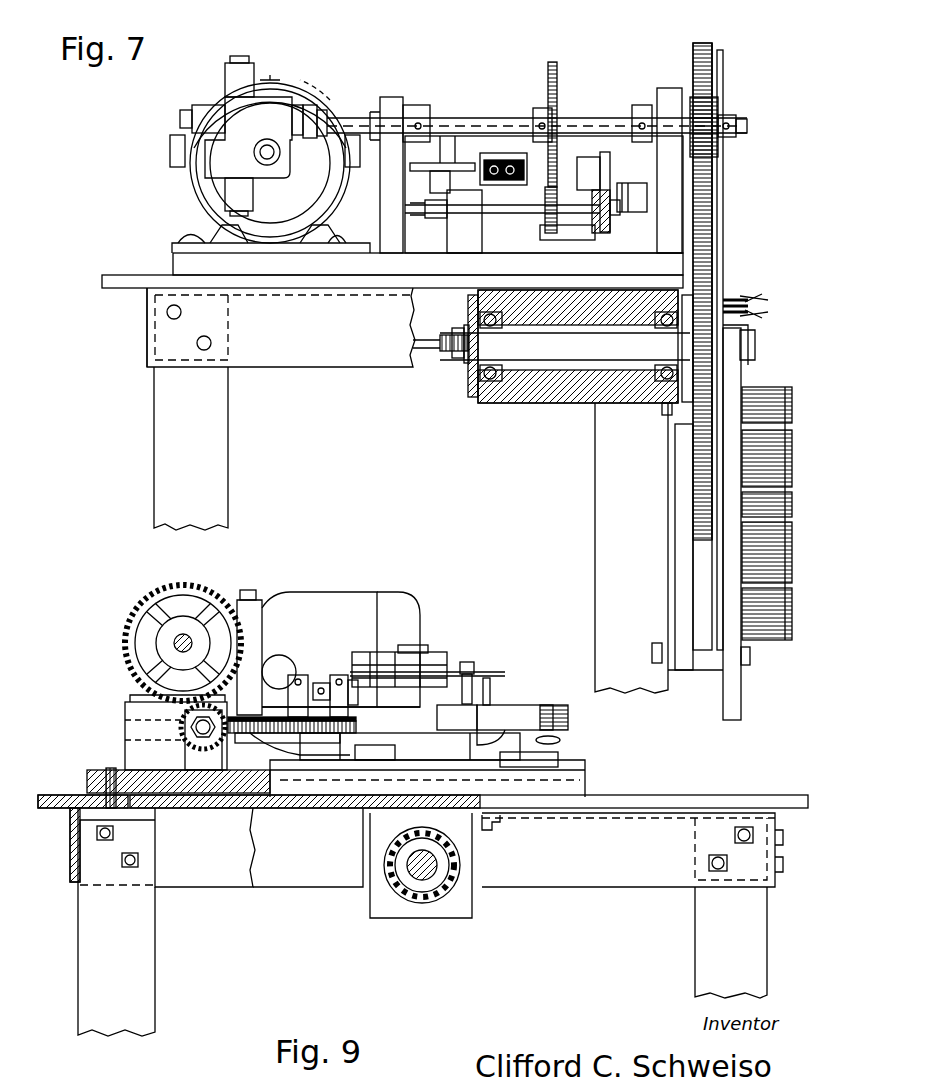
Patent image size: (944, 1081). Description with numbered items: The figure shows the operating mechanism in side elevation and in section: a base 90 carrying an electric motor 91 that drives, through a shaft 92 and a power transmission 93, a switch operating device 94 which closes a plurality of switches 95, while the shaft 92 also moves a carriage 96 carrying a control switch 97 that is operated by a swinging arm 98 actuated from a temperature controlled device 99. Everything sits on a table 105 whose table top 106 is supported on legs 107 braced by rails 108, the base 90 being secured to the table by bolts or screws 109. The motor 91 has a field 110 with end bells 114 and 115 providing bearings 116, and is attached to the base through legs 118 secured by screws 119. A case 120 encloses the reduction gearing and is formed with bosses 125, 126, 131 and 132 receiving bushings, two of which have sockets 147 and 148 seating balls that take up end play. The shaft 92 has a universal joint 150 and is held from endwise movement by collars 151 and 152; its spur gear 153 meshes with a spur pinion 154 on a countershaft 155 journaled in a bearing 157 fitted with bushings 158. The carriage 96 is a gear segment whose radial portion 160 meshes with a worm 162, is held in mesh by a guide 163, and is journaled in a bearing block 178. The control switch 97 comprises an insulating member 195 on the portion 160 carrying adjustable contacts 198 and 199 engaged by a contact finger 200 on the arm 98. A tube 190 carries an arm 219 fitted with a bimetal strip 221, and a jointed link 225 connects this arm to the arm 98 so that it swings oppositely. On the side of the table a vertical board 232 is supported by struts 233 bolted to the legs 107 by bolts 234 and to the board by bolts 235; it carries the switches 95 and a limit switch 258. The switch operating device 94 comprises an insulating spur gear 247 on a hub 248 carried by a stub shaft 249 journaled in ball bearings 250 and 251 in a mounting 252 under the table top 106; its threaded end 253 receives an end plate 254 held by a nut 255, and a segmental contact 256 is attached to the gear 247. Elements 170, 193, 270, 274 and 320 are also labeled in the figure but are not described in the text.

In FIG. 7, the base 90 is at (368, 275).
In FIG. 9, the base 90 is at (575, 785).
In FIG. 7, the electric motor 91 is at (208, 85).
In FIG. 9, the electric motor 91 is at (357, 592).
In FIG. 7, the shaft 92 is at (588, 116).
In FIG. 9, the shaft 92 is at (184, 655).
In FIG. 7, the power transmission 93 is at (285, 105).
In FIG. 7, the switch operating device 94 is at (715, 185).
In FIG. 7, the switches 95 is at (768, 610).
In FIG. 9, the carriage 96 is at (262, 716).
In FIG. 7, the control switch 97 is at (603, 152).
In FIG. 9, the control switch 97 is at (338, 674).
In FIG. 7, the swinging arm 98 is at (508, 152).
In FIG. 9, the swinging arm 98 is at (370, 660).
In FIG. 7, the temperature controlled device 99 is at (630, 185).
In FIG. 9, the temperature controlled device 99 is at (500, 706).
In FIG. 7, the table 105 is at (150, 392).
In FIG. 9, the table 105 is at (160, 890).
In FIG. 7, the table top 106 is at (105, 276).
In FIG. 9, the table top 106 is at (200, 808).
In FIG. 7, the legs 107 is at (165, 468).
In FIG. 9, the legs 107 is at (135, 985).
In FIG. 7, the rails 108 is at (290, 362).
In FIG. 9, the rails 108 is at (275, 875).
In FIG. 9, the bolts or screws 109 is at (108, 770).
In FIG. 9, the field 110 is at (330, 605).
In FIG. 7, the end bell 114 is at (278, 72).
In FIG. 9, the end bell 114 is at (283, 608).
In FIG. 9, the end bell 115 is at (405, 605).
In FIG. 9, the bearings 116 is at (440, 668).
In FIG. 7, the legs 118 is at (245, 249).
In FIG. 7, the screws 119 is at (183, 235).
In FIG. 7, the case 120 is at (232, 100).
In FIG. 7, the boss 125 is at (305, 112).
In FIG. 7, the boss 126 is at (195, 112).
In FIG. 7, the boss 131 is at (244, 70).
In FIG. 7, the boss 132 is at (253, 195).
In FIG. 7, the socket 147 is at (390, 96).
In FIG. 7, the socket 148 is at (668, 88).
In FIG. 9, the socket 148 is at (160, 648).
In FIG. 7, the universal joint 150 is at (320, 118).
In FIG. 7, the collar 151 is at (418, 105).
In FIG. 7, the collar 152 is at (640, 105).
In FIG. 7, the spur gear 153 is at (548, 68).
In FIG. 9, the spur gear 153 is at (125, 640).
In FIG. 7, the spur pinion 154 is at (555, 195).
In FIG. 9, the spur pinion 154 is at (180, 720).
In FIG. 7, the countershaft 155 is at (515, 215).
In FIG. 7, the bearing 157 is at (605, 233).
In FIG. 7, the bushings 158 is at (618, 212).
In FIG. 9, the radial portion 160 is at (250, 733).
In FIG. 7, the worm 162 is at (435, 220).
In FIG. 7, the guide 163 is at (463, 235).
In FIG. 9, the guide 163 is at (140, 747).
In FIG. 7, the slide 170 is at (565, 238).
In FIG. 9, the slide 170 is at (560, 760).
In FIG. 7, the bearing block 178 is at (420, 164).
In FIG. 9, the bearing block 178 is at (480, 657).
In FIG. 9, the tube 190 is at (570, 715).
In FIG. 9, the pin 193 is at (560, 742).
In FIG. 9, the insulating member 195 is at (320, 744).
In FIG. 9, the adjustable contact 198 is at (298, 680).
In FIG. 9, the adjustable contact 199 is at (352, 680).
In FIG. 7, the contact finger 200 is at (585, 157).
In FIG. 9, the contact finger 200 is at (319, 683).
In FIG. 9, the arm 219 is at (490, 722).
In FIG. 9, the strip of bimetal 221 is at (490, 680).
In FIG. 9, the jointed link 225 is at (410, 648).
In FIG. 7, the board 232 is at (733, 712).
In FIG. 7, the struts 233 is at (685, 428).
In FIG. 7, the bolts 234 is at (664, 412).
In FIG. 7, the bolts 235 is at (746, 665).
In FIG. 7, the spur gear 247 is at (703, 232).
In FIG. 7, the hub 248 is at (690, 300).
In FIG. 7, the stub shaft 249 is at (540, 350).
In FIG. 9, the stub shaft 249 is at (430, 872).
In FIG. 7, the ball bearing 250 is at (473, 398).
In FIG. 7, the ball bearing 251 is at (660, 380).
In FIG. 9, the ball bearing 251 is at (398, 888).
In FIG. 7, the mounting 252 is at (572, 392).
In FIG. 9, the mounting 252 is at (418, 922).
In FIG. 7, the threaded end 253 is at (438, 342).
In FIG. 7, the end plate 254 is at (455, 365).
In FIG. 7, the nut 255 is at (460, 325).
In FIG. 7, the segmental shaped contact 256 is at (723, 260).
In FIG. 7, the limit switch 258 is at (760, 306).
In FIG. 7, the pinion 270 is at (712, 100).
In FIG. 7, the drum 274 is at (760, 395).
In FIG. 9, the pin 320 is at (390, 750).